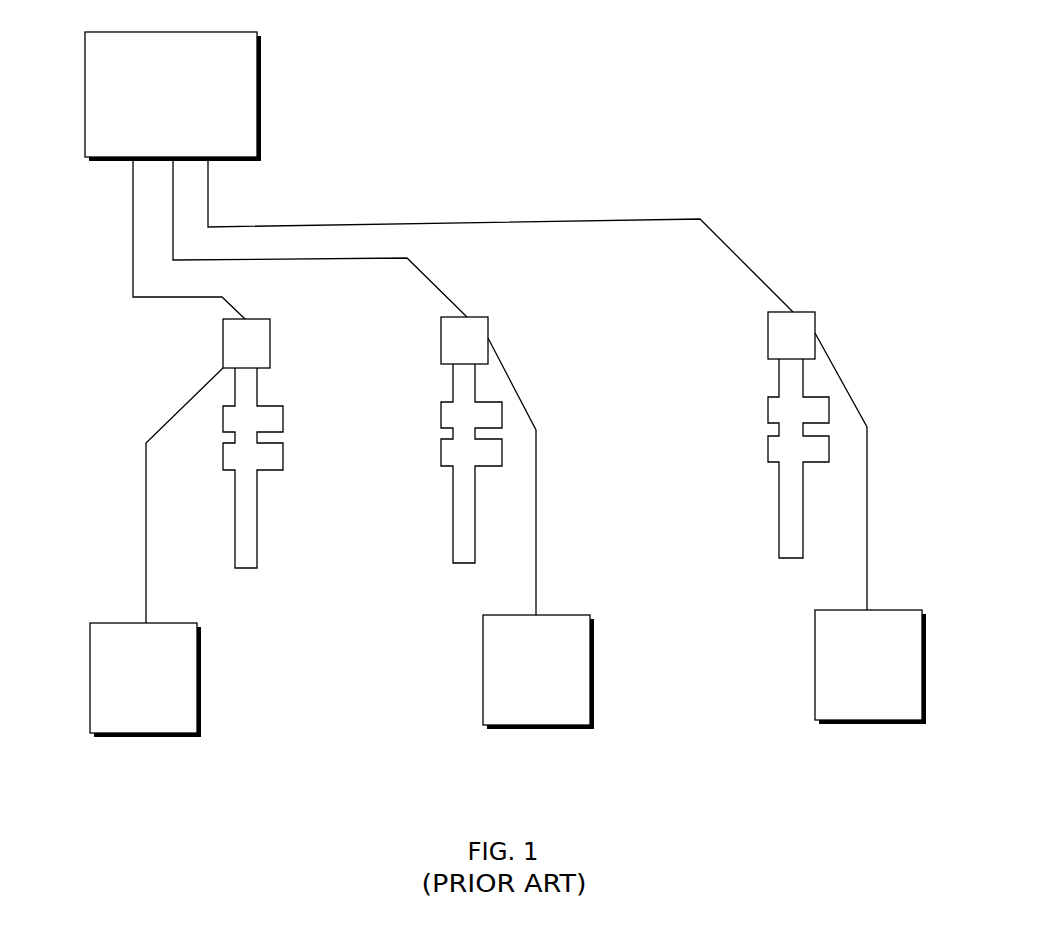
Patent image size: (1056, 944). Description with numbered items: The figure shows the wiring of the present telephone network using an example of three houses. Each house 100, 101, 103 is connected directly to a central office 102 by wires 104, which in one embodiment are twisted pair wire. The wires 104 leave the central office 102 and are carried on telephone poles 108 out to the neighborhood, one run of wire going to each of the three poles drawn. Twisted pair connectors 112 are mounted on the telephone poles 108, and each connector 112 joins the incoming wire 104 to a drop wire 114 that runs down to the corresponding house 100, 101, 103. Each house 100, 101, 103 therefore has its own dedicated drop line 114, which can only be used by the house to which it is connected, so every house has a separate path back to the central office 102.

The house 100 is at (200, 700).
The house 101 is at (593, 695).
The central office 102 is at (263, 112).
The house 103 is at (925, 688).
The wires 104 is at (173, 199).
The telephone poles 108 is at (257, 493).
The twisted pair connectors 112 is at (223, 355).
The drop wires 114 is at (146, 533).